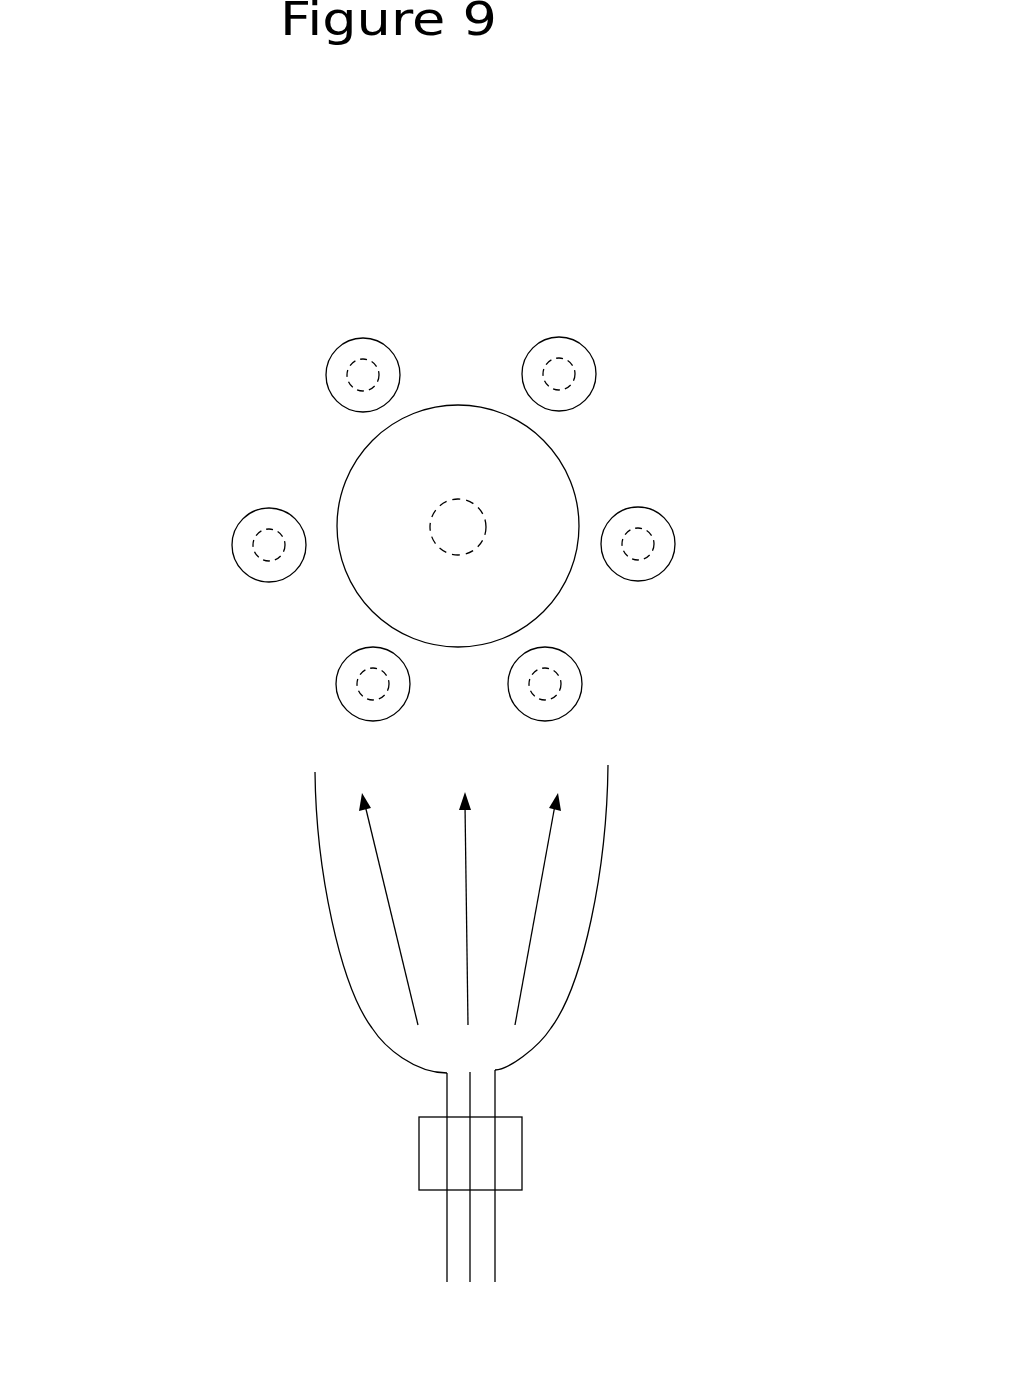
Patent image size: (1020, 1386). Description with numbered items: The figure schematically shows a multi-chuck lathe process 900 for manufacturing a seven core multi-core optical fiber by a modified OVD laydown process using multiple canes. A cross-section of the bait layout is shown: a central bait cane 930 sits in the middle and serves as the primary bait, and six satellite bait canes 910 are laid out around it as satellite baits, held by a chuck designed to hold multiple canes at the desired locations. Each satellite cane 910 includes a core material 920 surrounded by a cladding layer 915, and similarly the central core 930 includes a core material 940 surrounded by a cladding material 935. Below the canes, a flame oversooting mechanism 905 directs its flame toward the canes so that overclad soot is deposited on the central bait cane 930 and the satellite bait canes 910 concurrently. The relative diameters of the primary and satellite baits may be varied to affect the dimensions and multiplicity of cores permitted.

The flame-based processing system 900 is at (663, 152).
The flame oversooting mechanism 905 is at (522, 1153).
The satellite bait canes 910 is at (406, 490).
The cladding layer 915 is at (396, 335).
The core material 920 is at (372, 367).
The central bait cane 930 is at (333, 529).
The cladding material 935 is at (409, 529).
The core material 940 is at (455, 518).